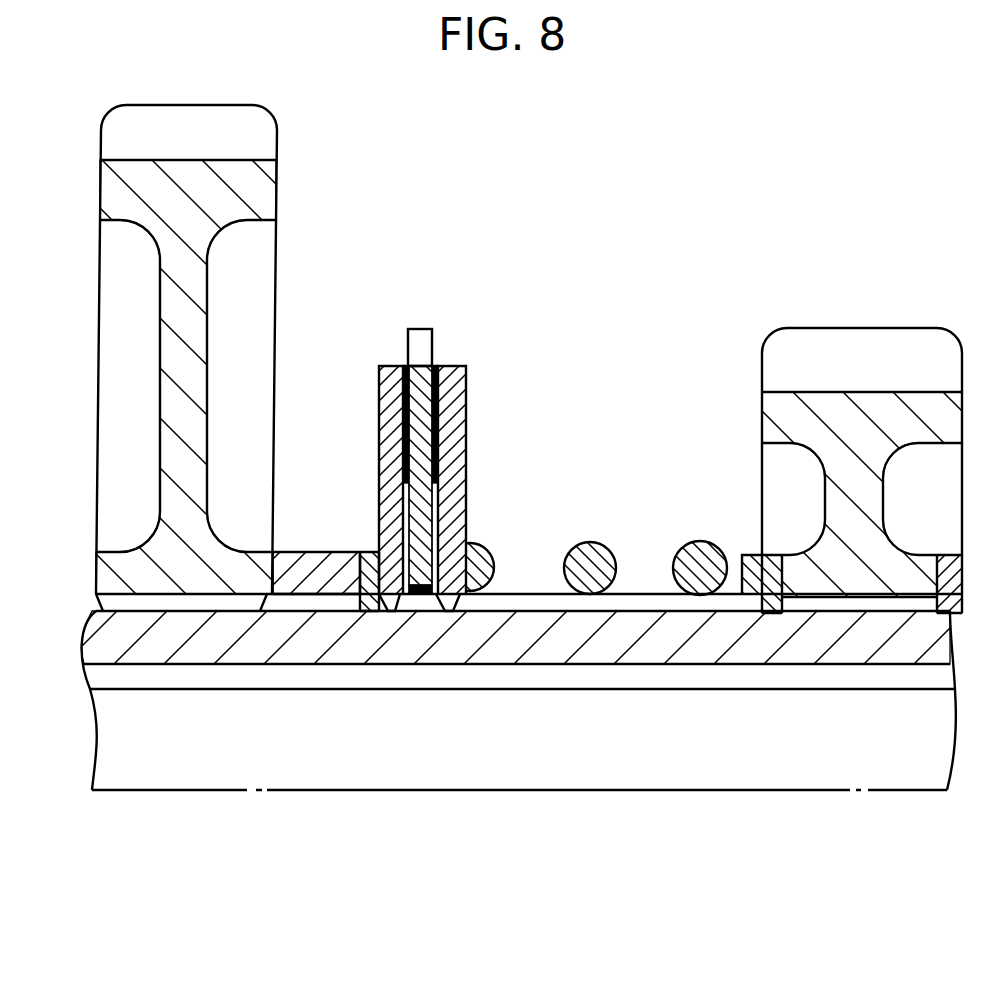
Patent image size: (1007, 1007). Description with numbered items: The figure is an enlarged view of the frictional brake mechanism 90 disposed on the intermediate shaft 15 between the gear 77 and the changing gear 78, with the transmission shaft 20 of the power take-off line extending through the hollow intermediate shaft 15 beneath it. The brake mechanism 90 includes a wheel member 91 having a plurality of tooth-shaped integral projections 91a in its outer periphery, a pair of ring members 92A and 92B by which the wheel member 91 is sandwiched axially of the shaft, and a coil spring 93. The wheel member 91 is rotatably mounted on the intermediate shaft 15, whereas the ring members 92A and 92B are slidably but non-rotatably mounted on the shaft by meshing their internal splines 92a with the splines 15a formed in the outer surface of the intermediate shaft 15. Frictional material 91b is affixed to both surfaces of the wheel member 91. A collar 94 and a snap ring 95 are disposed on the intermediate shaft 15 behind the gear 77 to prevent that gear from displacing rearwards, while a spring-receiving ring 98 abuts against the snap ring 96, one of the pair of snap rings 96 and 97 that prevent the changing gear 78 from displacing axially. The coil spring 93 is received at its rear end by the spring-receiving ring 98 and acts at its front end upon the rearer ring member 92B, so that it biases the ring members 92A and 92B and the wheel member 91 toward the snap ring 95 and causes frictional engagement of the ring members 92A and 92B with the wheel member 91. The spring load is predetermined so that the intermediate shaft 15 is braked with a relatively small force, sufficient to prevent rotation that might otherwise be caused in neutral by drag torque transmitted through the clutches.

The gear 77 is at (186, 128).
The changing gear 78 is at (877, 355).
The frictional brake mechanism 90 is at (449, 386).
The wheel member 91 is at (422, 507).
The tooth-shaped integral projections 91a is at (417, 340).
The frictional material 91b is at (440, 398).
The ring member 92A is at (383, 380).
The ring member 92B is at (467, 428).
The internal splines 92a is at (390, 603).
The coil spring 93 is at (590, 543).
The collar 94 is at (300, 570).
The snap ring 95 is at (368, 563).
The snap ring 96 is at (770, 608).
The snap ring 97 is at (940, 610).
The spring-receiving ring 98 is at (747, 557).
The intermediate shaft 15 is at (653, 637).
The splines 15a is at (538, 603).
The transmission shaft 20 is at (805, 770).